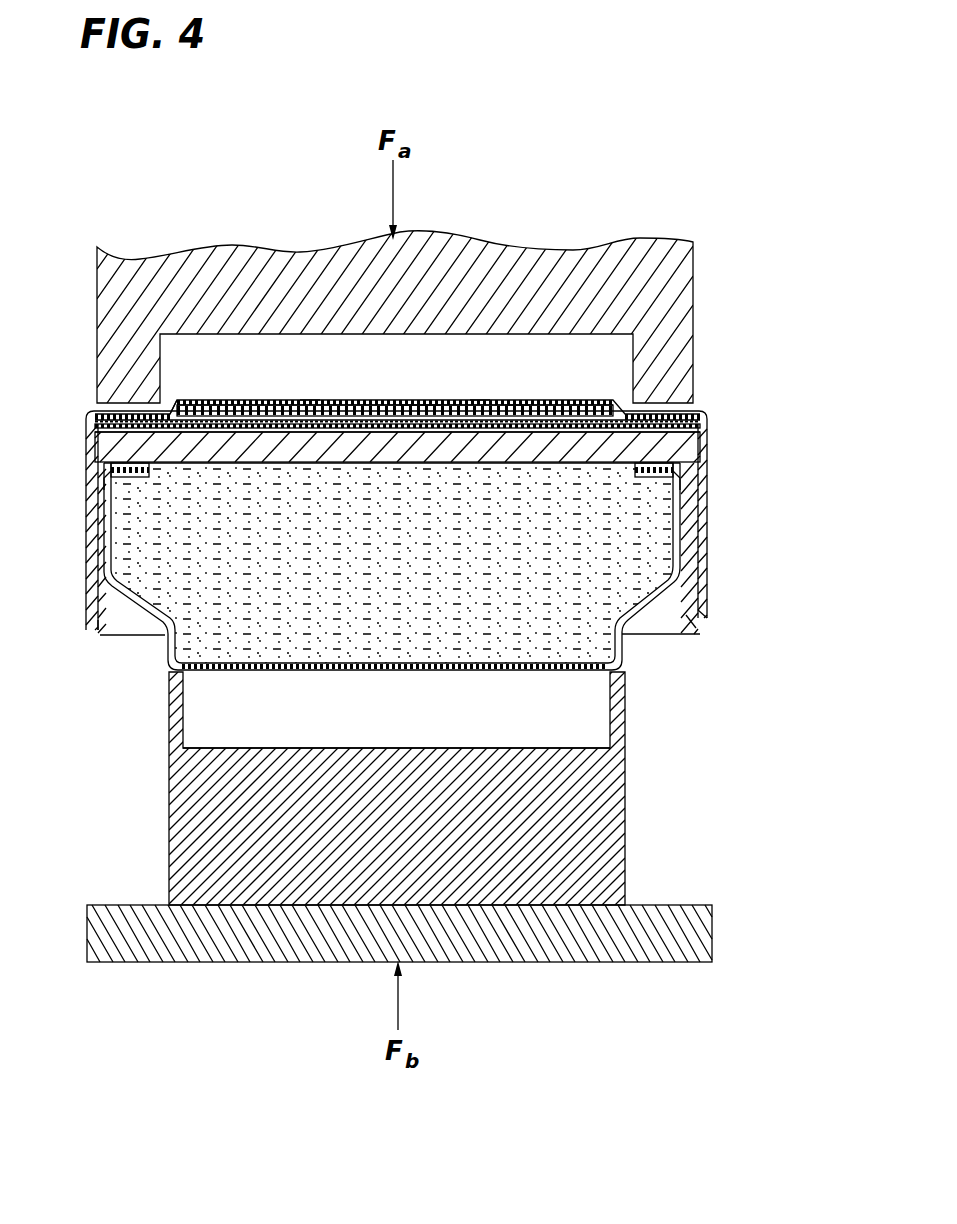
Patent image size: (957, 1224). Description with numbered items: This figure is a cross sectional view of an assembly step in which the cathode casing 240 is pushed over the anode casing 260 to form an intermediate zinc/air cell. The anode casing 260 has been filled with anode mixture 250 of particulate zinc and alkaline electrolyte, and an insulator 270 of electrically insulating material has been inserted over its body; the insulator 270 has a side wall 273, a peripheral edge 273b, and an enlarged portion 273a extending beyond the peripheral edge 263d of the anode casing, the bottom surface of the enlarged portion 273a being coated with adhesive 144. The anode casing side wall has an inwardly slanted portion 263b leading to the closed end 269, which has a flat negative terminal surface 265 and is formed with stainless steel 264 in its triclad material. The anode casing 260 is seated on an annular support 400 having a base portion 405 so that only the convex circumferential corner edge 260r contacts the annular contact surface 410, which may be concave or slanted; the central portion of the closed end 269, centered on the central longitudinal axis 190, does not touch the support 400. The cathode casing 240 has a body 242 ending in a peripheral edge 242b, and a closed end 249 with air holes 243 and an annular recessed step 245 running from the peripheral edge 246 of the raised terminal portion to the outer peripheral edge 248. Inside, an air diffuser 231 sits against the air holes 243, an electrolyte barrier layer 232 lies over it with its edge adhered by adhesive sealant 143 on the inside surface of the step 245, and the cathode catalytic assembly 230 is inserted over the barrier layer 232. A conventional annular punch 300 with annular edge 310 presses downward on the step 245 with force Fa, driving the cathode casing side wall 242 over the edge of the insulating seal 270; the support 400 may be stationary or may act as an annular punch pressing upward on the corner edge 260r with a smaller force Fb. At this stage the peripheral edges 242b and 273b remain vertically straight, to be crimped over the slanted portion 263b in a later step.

The annular punch 300 is at (593, 250).
The annular edge 310 is at (97, 358).
The outer peripheral edge 248 is at (90, 412).
The cathode casing 240 is at (256, 388).
The closed end of cathode casing 249 is at (440, 398).
The air holes 243 is at (308, 399).
The air diffuser 231 is at (520, 399).
The peripheral edge of raised terminal portion 246 is at (168, 405).
The annular recessed step 245 is at (702, 405).
The adhesive sealant 143 is at (703, 422).
The cathode catalytic assembly 230 is at (685, 440).
The electrolyte barrier layer 232 is at (700, 432).
The enlarged portion of insulator ring 273a is at (98, 446).
The adhesive 144 is at (133, 477).
The peripheral edge of anode casing 263d is at (102, 478).
The body of cathode casing 242 is at (88, 545).
The anode mixture 250 is at (244, 610).
The electrical insulator material 270 is at (690, 523).
The side wall of insulating seal 273 is at (693, 560).
The peripheral edge of cathode casing 242b is at (710, 588).
The peripheral edge of insulator ring 273b is at (695, 620).
The inwardly slanted portion 263b is at (648, 600).
The circumferential corner edge 260r is at (168, 668).
The anode casing 260 is at (537, 684).
The negative terminal surface 265 is at (345, 672).
The stainless steel 264 is at (440, 672).
The closed end of anode casing 269 is at (503, 672).
The central longitudinal axis 190 is at (398, 672).
The annular support 400 is at (625, 765).
The annular contact surface 410 is at (625, 714).
The base portion 405 is at (712, 930).